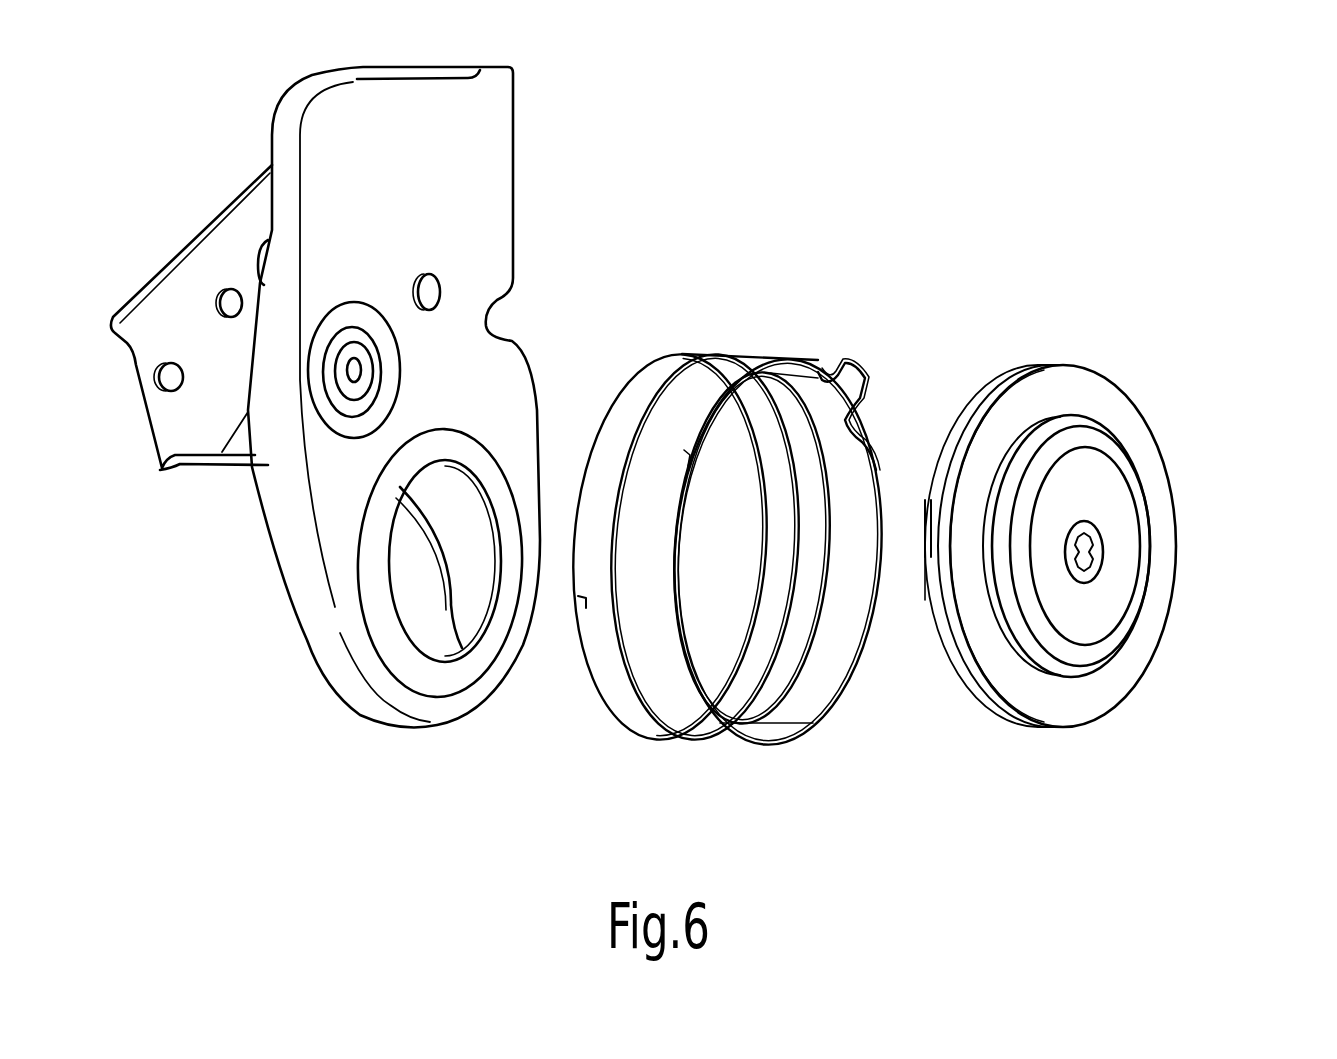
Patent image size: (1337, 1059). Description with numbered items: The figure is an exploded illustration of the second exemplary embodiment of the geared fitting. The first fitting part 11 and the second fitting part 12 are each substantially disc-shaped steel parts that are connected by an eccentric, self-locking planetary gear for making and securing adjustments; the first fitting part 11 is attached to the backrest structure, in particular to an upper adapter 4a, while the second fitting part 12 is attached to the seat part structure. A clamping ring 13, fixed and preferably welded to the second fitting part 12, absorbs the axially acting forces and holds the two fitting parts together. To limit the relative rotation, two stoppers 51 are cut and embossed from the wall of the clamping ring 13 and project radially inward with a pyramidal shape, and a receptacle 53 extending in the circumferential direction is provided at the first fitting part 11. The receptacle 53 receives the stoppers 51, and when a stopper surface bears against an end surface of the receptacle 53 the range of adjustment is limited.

The upper adapter 4a is at (473, 228).
The clamping ring 13 is at (700, 393).
The first fitting part 11 is at (925, 500).
The second fitting part 12 is at (1105, 410).
The stopper 51 is at (585, 610).
The receptacle 53 is at (925, 560).